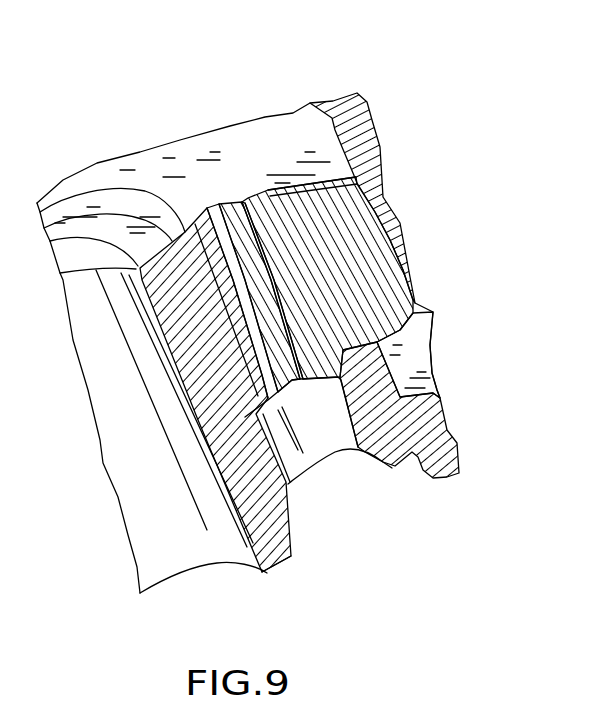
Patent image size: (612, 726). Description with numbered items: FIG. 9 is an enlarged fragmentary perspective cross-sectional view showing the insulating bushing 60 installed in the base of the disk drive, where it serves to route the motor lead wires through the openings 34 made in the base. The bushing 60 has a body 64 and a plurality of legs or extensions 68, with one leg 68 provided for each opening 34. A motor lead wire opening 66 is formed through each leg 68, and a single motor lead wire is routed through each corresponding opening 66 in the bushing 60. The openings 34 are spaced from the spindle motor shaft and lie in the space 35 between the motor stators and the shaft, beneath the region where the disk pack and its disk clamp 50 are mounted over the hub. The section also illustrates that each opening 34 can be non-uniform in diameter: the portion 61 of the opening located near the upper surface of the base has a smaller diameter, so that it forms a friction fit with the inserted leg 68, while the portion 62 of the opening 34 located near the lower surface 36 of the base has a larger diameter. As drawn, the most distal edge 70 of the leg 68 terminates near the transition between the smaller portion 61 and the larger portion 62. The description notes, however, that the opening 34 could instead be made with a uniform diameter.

The openings 34 is at (350, 486).
The space 35 is at (278, 133).
The lower surface 36 is at (288, 567).
The disk clamp 50 is at (133, 452).
The insulating bushing 60 is at (156, 122).
The portion of the opening 61 is at (252, 274).
The portion of the opening 62 is at (325, 440).
The body 64 is at (190, 150).
The motor lead wire opening 66 is at (154, 162).
The legs 68 is at (292, 310).
The most distal edge 70 is at (312, 382).